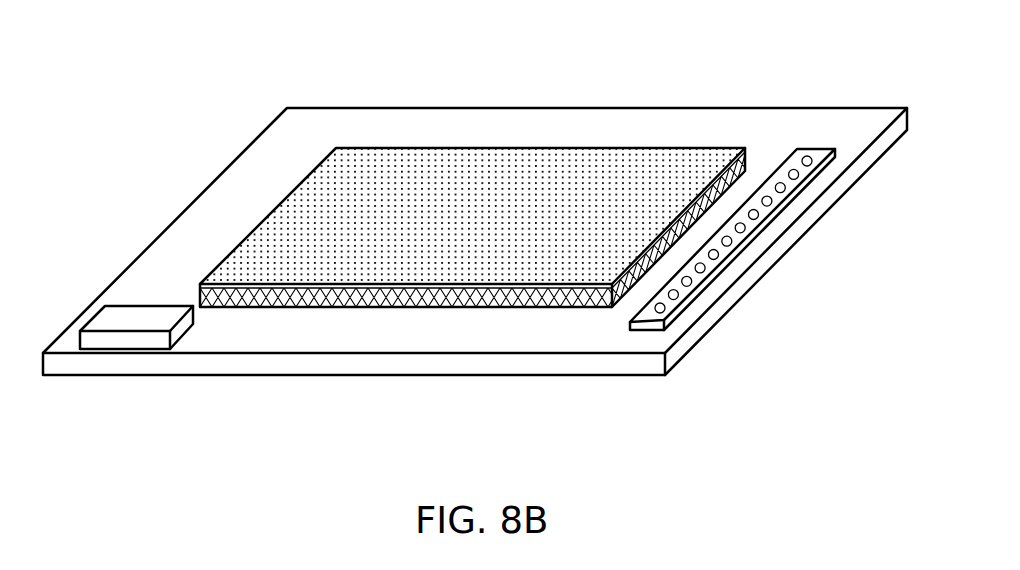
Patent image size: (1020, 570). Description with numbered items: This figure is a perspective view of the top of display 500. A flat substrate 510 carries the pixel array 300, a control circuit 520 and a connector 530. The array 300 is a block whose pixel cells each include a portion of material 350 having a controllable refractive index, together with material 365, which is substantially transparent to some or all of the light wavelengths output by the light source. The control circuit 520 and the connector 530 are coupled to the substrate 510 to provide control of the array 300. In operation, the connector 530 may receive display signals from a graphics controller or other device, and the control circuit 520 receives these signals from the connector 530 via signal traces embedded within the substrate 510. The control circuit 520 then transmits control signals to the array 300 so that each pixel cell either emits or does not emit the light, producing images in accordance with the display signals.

The display 500 is at (475, 200).
The substrate 510 is at (286, 129).
The control circuit 520 is at (182, 310).
The connector 530 is at (818, 151).
The array 300 is at (477, 232).
The material having a controllable refractive index 350 is at (451, 307).
The material 365 is at (651, 157).